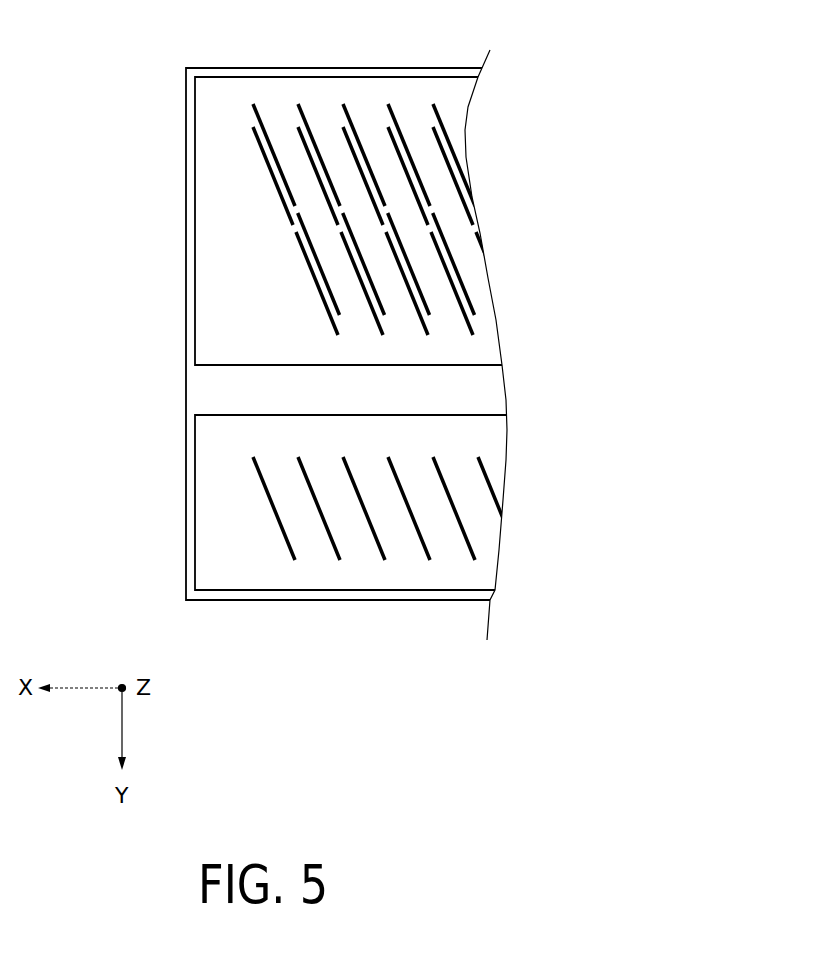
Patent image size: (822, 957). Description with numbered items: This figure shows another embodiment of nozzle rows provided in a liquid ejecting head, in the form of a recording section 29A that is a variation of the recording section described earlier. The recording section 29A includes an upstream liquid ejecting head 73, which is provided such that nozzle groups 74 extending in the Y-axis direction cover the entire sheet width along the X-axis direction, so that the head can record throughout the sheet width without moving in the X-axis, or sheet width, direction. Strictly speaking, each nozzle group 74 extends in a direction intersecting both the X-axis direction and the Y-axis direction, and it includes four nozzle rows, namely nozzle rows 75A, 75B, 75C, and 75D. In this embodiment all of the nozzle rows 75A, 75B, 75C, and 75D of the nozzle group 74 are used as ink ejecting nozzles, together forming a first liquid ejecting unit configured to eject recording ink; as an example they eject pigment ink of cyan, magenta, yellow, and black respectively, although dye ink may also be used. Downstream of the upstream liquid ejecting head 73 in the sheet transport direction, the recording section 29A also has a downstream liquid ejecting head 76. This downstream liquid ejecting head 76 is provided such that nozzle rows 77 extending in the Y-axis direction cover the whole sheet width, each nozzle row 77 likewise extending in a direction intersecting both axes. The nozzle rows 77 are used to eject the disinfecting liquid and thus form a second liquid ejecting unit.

The recording section 29A is at (186, 357).
The upstream liquid ejecting head 73 is at (195, 232).
The nozzle group 74 is at (341, 214).
The nozzle row 75A is at (306, 152).
The nozzle row 75B is at (313, 128).
The nozzle row 75C is at (378, 300).
The nozzle row 75D is at (383, 294).
The downstream liquid ejecting head 76 is at (195, 498).
The nozzle row 77 is at (333, 533).